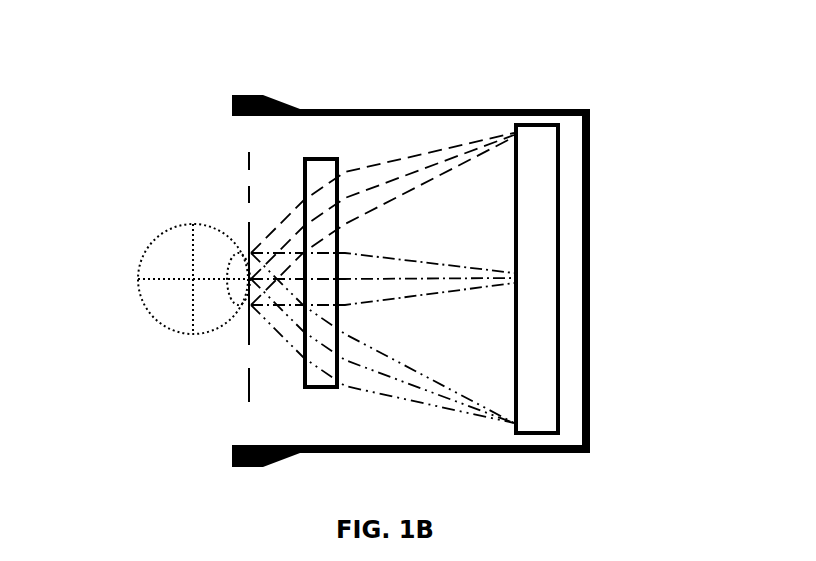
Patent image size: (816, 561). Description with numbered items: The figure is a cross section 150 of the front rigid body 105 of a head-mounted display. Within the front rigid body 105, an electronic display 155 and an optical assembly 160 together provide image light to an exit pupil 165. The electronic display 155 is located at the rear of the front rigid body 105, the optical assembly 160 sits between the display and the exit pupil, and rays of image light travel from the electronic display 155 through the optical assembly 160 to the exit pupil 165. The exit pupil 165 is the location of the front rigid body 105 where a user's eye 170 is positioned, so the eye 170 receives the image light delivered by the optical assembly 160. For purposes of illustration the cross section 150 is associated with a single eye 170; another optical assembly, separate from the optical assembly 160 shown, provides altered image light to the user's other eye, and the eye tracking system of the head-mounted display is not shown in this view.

The cross section 150 is at (12, 31).
The front rigid body 105 is at (563, 109).
The electronic display 155 is at (561, 148).
The optical assembly 160 is at (303, 169).
The exit pupil 165 is at (245, 387).
The eye 170 is at (162, 232).